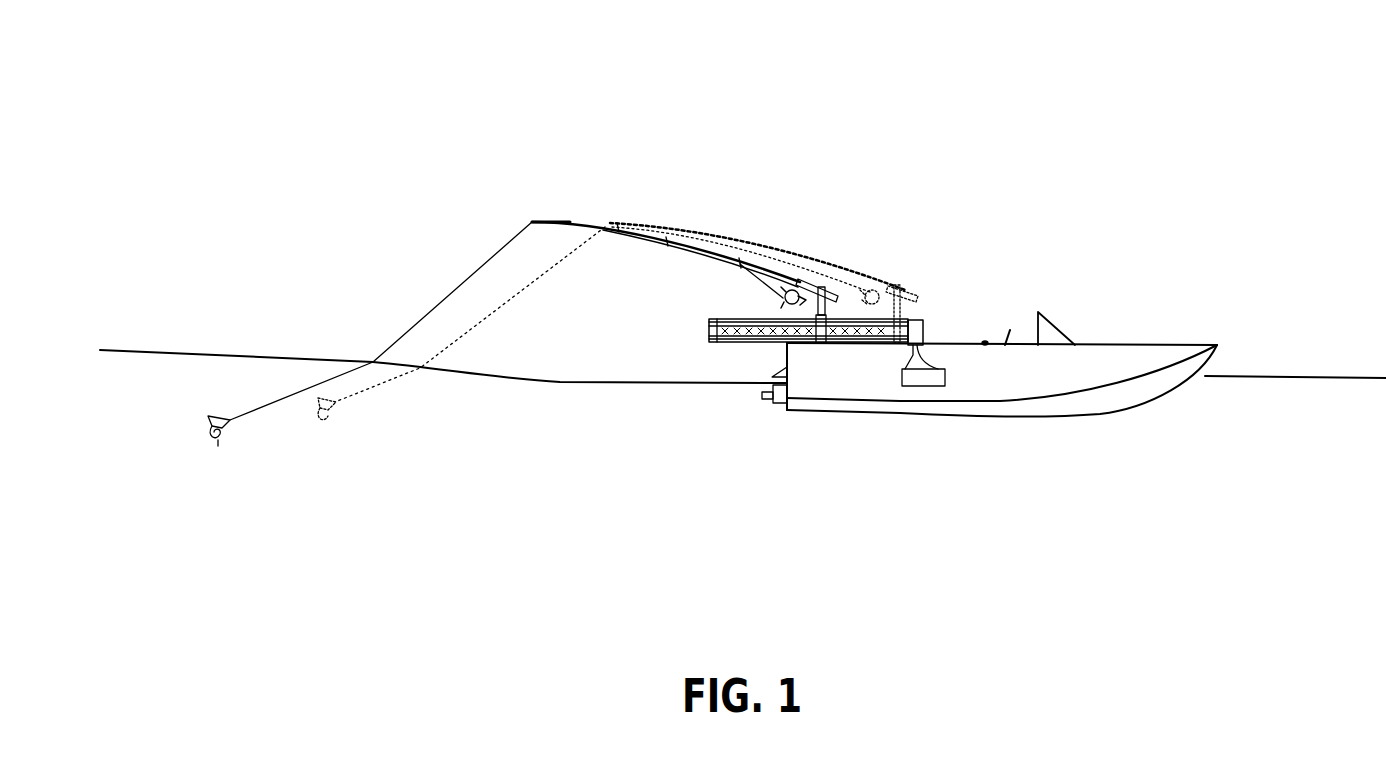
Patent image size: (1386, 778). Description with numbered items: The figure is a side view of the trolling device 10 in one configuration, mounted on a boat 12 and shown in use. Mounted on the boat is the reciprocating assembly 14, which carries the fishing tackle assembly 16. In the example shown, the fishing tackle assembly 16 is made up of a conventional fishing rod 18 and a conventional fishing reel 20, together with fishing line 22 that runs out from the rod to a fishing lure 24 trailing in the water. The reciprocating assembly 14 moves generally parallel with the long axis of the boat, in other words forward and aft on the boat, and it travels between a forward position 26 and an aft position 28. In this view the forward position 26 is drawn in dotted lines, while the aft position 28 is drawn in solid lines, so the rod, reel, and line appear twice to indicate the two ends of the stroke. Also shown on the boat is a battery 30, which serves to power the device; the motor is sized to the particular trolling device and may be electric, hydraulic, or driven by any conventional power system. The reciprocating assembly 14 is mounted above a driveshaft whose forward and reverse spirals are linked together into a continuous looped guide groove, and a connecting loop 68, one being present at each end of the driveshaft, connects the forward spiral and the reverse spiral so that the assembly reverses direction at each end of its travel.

The trolling device 10 is at (957, 187).
The boat 12 is at (1138, 420).
The reciprocating assembly 14 is at (904, 320).
The fishing tackle assembly 16 is at (883, 280).
The fishing rod 18 is at (740, 260).
The fishing reel 20 is at (787, 298).
The fishing line 22 is at (450, 290).
The fishing lure 24 is at (221, 448).
The forward position 26 is at (905, 292).
The aft position 28 is at (822, 282).
The battery 30 is at (932, 378).
The connecting loop 68 is at (432, 462).